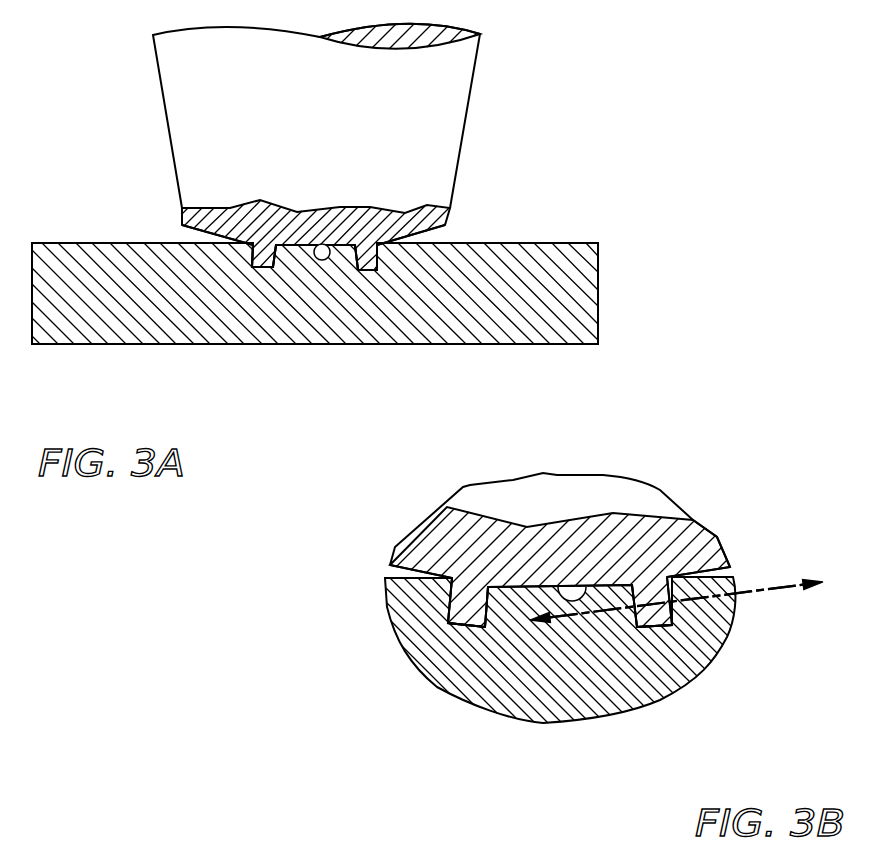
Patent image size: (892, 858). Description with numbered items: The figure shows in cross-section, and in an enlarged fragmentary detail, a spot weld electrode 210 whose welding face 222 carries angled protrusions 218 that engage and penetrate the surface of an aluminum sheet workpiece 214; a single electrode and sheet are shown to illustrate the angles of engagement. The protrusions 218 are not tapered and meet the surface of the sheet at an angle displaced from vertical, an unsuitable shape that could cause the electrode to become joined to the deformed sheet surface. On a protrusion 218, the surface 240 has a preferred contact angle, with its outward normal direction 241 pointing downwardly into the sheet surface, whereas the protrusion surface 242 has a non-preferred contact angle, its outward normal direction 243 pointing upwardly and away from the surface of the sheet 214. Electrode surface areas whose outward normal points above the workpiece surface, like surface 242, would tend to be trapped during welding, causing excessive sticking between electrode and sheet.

In FIG. 3A, the spot weld electrode 210 is at (349, 109).
In FIG. 3B, the spot weld electrode 210 is at (558, 512).
In FIG. 3A, the aluminum sheet workpiece 214 is at (585, 289).
In FIG. 3B, the aluminum sheet workpiece 214 is at (692, 662).
In FIG. 3A, the protrusions 218 is at (262, 265).
In FIG. 3B, the protrusions 218 is at (452, 623).
In FIG. 3A, the welding face 222 is at (328, 248).
In FIG. 3B, the welding face 222 is at (589, 607).
In FIG. 3A, the protrusion surface 240 is at (352, 258).
In FIG. 3B, the protrusion surface 240 is at (492, 605).
In FIG. 3B, the outward normal direction 241 is at (580, 615).
In FIG. 3A, the protrusion surface 242 is at (253, 255).
In FIG. 3B, the protrusion surface 242 is at (452, 600).
In FIG. 3B, the outward normal direction 243 is at (763, 587).